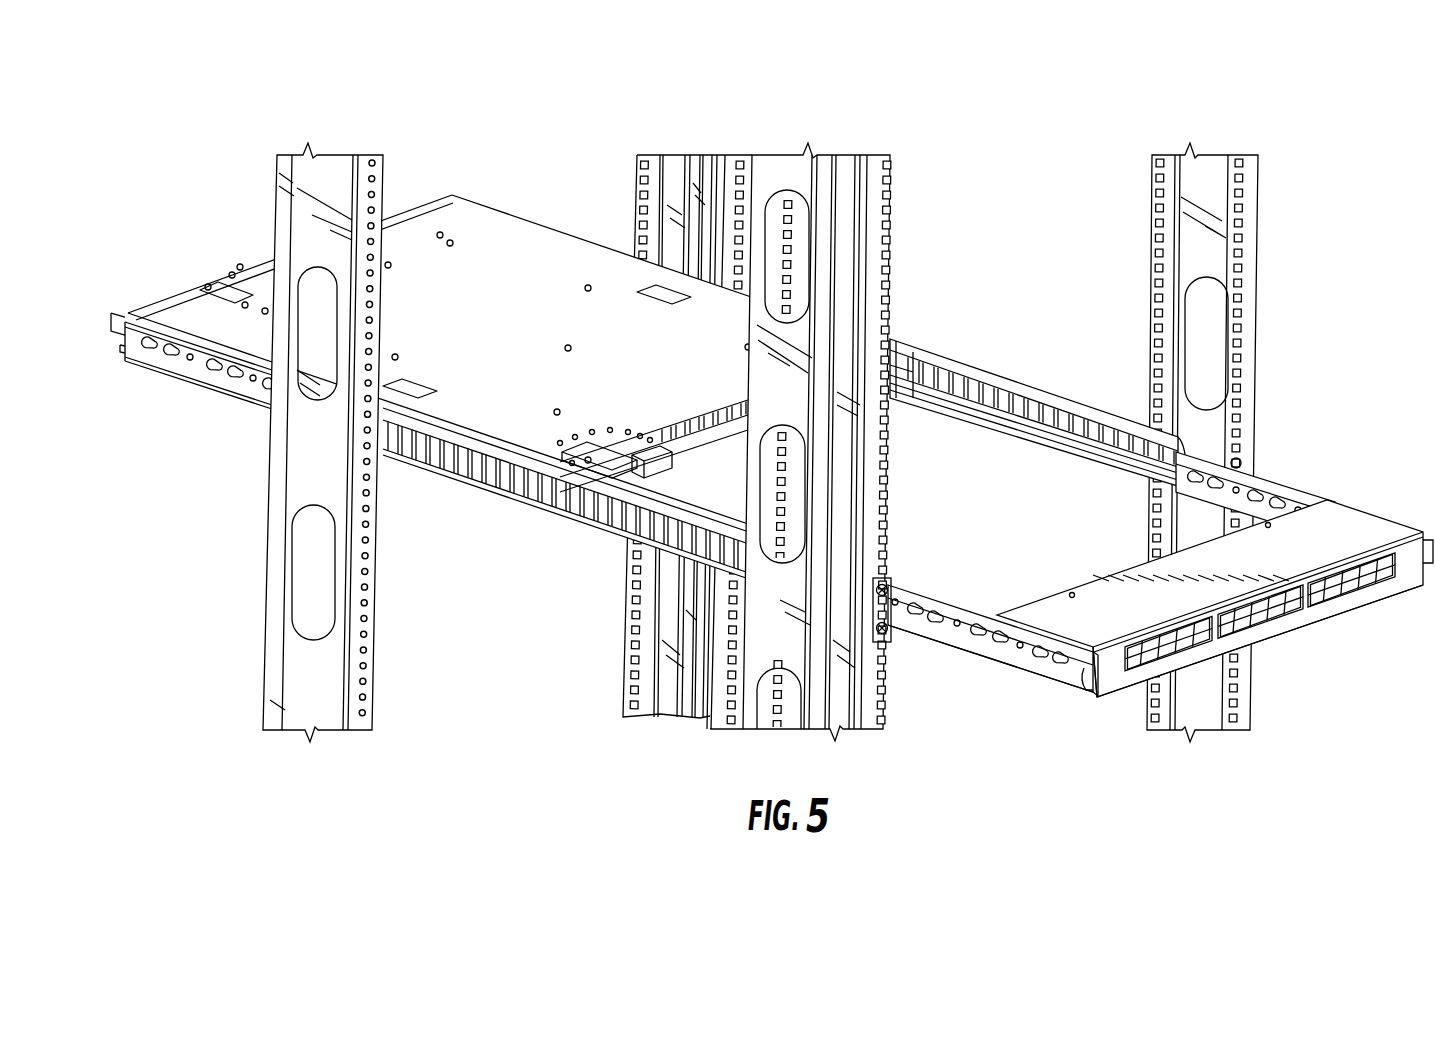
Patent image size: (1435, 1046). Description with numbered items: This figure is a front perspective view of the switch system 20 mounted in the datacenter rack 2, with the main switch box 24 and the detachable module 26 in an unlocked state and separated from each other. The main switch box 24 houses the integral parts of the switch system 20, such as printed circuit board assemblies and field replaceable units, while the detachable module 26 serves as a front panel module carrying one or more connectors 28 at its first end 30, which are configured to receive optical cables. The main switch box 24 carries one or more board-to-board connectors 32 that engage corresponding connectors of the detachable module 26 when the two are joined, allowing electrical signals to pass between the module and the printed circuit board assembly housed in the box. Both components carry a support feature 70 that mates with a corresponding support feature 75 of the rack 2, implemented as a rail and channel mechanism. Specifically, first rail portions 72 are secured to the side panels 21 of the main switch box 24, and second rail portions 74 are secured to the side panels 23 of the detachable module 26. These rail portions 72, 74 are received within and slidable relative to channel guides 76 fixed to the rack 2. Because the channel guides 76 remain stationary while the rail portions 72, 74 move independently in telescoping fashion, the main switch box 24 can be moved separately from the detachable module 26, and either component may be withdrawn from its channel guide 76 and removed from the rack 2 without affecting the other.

The datacenter rack 2 is at (180, 538).
The switch system 20 is at (1012, 251).
The side panels of the main switch box 21 is at (176, 310).
The side panels of the detachable module 23 is at (1049, 616).
The main switch box 24 is at (555, 283).
The detachable module 26 is at (1352, 528).
The connectors 28 is at (1377, 577).
The first end of the detachable module 30 is at (1284, 648).
The board-to-board connectors 32 is at (700, 430).
The support feature 70 is at (942, 651).
The first rail portions 72 is at (182, 362).
The second rail portions 74 is at (988, 650).
The support feature of the datacenter rack 75 is at (468, 533).
The channel guides 76 is at (510, 493).